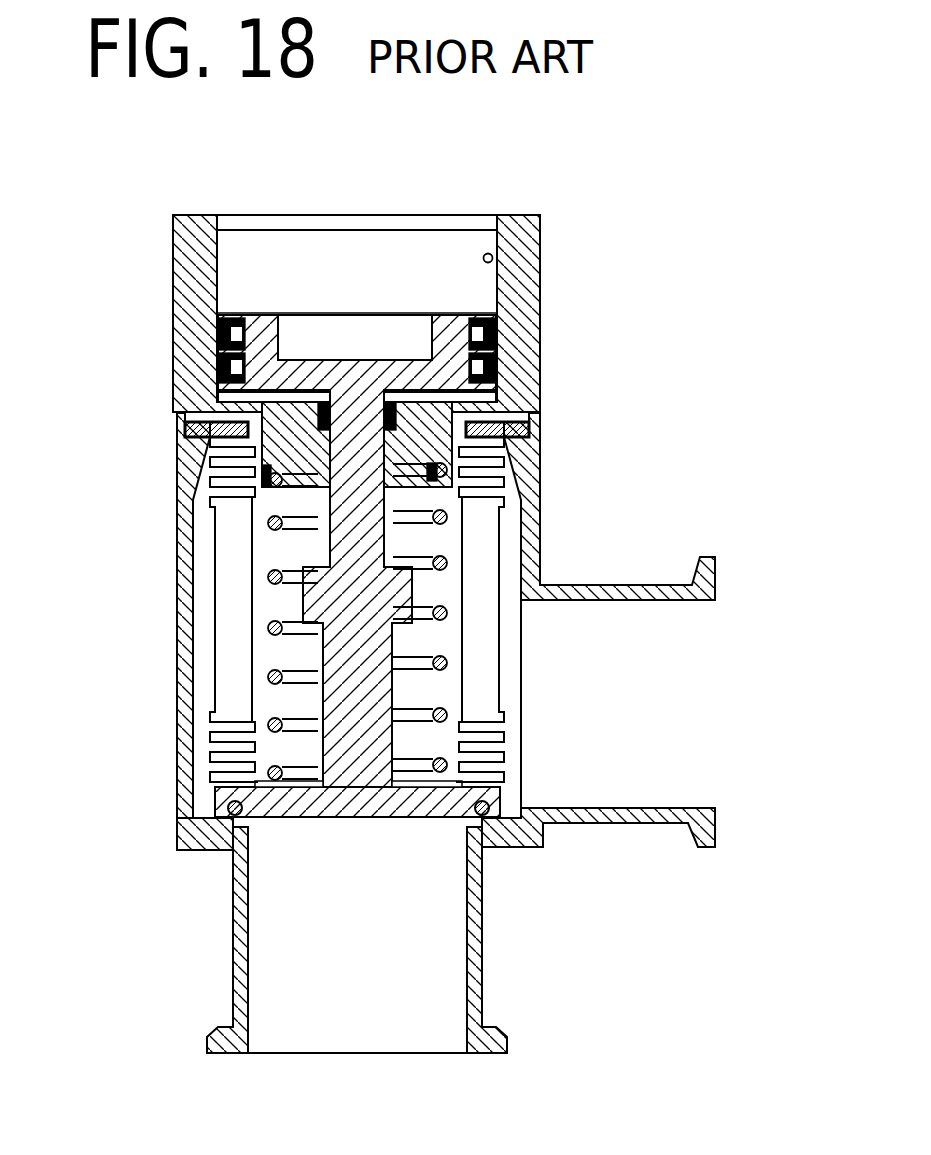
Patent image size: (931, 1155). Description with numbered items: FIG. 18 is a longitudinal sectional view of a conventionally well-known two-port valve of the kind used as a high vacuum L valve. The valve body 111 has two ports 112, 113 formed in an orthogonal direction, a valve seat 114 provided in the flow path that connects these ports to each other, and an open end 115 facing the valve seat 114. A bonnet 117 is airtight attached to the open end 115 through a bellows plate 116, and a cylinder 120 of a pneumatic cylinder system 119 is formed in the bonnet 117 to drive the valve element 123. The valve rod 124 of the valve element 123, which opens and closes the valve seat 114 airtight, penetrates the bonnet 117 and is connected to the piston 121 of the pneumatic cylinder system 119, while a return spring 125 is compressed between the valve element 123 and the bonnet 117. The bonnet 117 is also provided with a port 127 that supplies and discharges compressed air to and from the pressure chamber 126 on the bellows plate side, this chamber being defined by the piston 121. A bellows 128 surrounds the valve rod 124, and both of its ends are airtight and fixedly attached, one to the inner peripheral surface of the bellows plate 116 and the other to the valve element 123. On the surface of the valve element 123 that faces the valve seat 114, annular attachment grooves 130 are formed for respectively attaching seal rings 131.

The valve body 111 is at (178, 625).
The port 112 is at (700, 627).
The port 113 is at (408, 1045).
The valve seat 114 is at (232, 828).
The open end 115 is at (185, 430).
The bellows plate 116 is at (527, 440).
The bonnet 117 is at (183, 246).
The pneumatic cylinder system 119 is at (403, 253).
The cylinder 120 is at (493, 260).
The piston 121 is at (260, 328).
The valve element 123 is at (408, 812).
The valve rod 124 is at (345, 540).
The return spring 125 is at (275, 677).
The pressure chamber 126 is at (493, 382).
The port 127 is at (480, 397).
The bellows 128 is at (213, 482).
The annular attachment groove 130 is at (247, 817).
The seal ring 131 is at (228, 806).